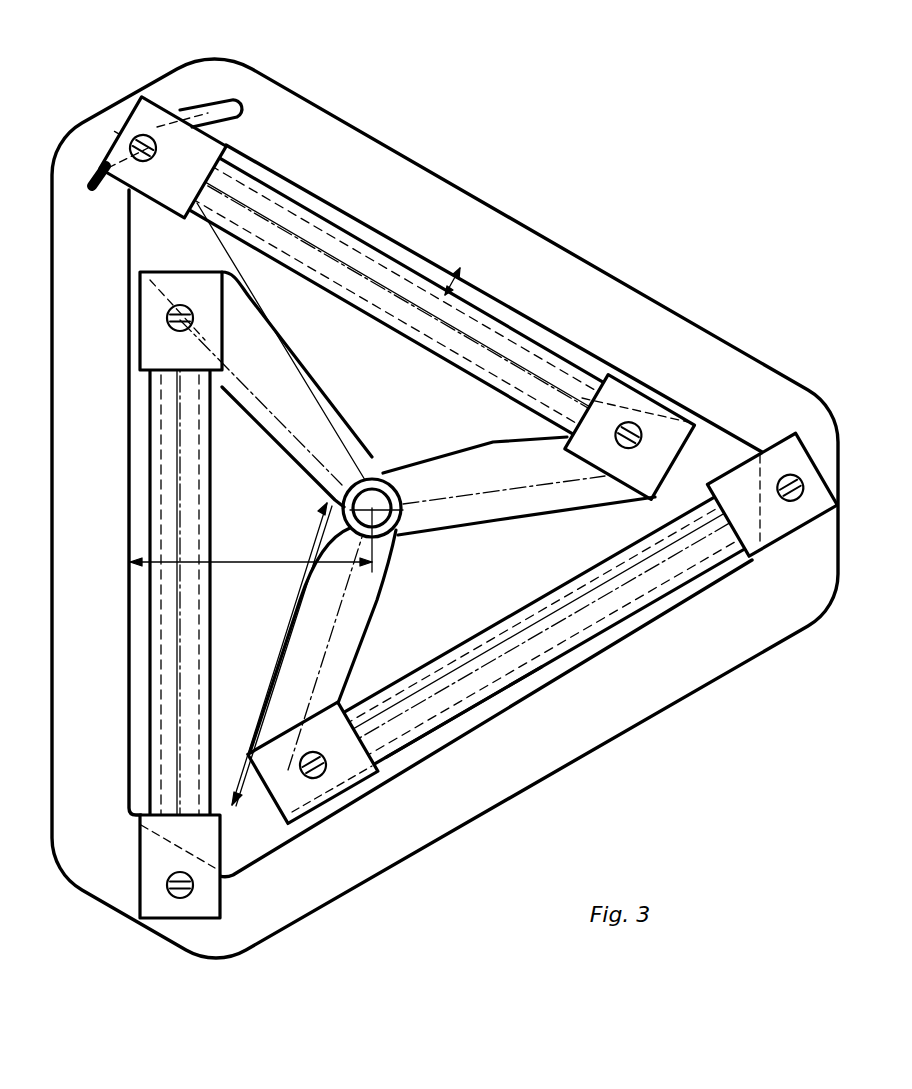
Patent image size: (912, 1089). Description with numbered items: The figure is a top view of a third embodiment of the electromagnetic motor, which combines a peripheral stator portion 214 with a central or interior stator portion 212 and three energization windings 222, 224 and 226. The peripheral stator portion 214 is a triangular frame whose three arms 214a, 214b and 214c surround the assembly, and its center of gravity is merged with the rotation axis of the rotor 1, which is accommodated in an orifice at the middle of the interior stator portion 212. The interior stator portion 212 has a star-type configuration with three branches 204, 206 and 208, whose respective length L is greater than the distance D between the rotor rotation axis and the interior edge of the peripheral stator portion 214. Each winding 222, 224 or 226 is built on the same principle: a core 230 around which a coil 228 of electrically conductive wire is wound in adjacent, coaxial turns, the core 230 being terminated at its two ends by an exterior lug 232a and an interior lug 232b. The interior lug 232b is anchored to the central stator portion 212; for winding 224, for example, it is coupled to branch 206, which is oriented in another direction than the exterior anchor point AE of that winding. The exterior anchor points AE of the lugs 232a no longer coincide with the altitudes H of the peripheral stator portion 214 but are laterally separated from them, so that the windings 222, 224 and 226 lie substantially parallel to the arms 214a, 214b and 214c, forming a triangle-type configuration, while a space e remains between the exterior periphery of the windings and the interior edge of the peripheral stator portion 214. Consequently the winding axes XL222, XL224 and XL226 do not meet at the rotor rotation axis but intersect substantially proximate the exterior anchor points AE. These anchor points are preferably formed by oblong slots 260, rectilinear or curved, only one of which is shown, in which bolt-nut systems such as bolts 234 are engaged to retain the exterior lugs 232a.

The peripheral stator portion 214 is at (52, 312).
The arm of the peripheral stator portion 214a is at (522, 740).
The arm of the peripheral stator portion 214b is at (95, 498).
The arm of the peripheral stator portion 214c is at (583, 297).
The energization winding 222 is at (613, 632).
The energization winding 224 is at (147, 678).
The energization winding 226 is at (505, 296).
The axis of winding 222 XL222 is at (538, 632).
The axis of winding 224 XL224 is at (180, 727).
The axis of winding 226 XL226 is at (320, 250).
The branch of the interior stator portion 204 is at (383, 653).
The branch of the interior stator portion 206 is at (297, 370).
The branch of the interior stator portion 208 is at (494, 510).
The interior stator portion 212 is at (401, 522).
The rotor 1 is at (372, 508).
The coil 228 is at (428, 760).
The core 230 is at (386, 740).
The exterior lug 232a is at (777, 528).
The interior lug 232b is at (165, 302).
The bolt 234 is at (137, 133).
The oblong slot 260 is at (88, 180).
The altitude H is at (125, 88).
The distance D is at (251, 551).
The length of branch L is at (282, 654).
The space e is at (460, 272).
The exterior anchor point AE is at (178, 920).